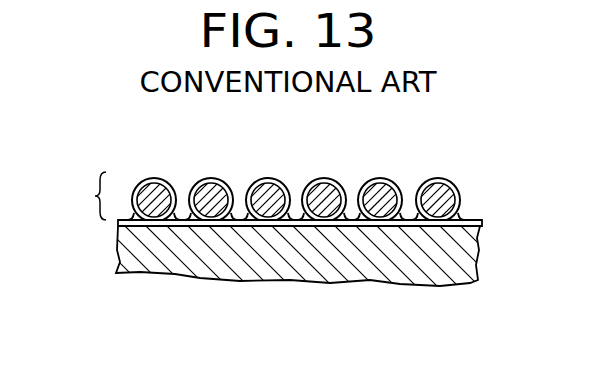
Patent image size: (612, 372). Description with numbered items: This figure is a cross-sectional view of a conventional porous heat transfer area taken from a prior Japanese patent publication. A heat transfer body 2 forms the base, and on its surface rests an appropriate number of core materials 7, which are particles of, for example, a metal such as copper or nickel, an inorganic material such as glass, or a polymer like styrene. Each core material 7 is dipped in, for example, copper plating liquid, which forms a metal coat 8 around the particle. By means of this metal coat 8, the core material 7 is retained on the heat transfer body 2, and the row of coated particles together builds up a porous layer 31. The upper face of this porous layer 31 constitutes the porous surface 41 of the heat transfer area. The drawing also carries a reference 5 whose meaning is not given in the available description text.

The heat transfer body 2 is at (377, 263).
The adhesive layer 5 is at (350, 213).
The core material 7 is at (157, 195).
The metal coat 8 is at (273, 185).
The porous surface 41 is at (220, 178).
The porous layer 31 is at (58, 215).